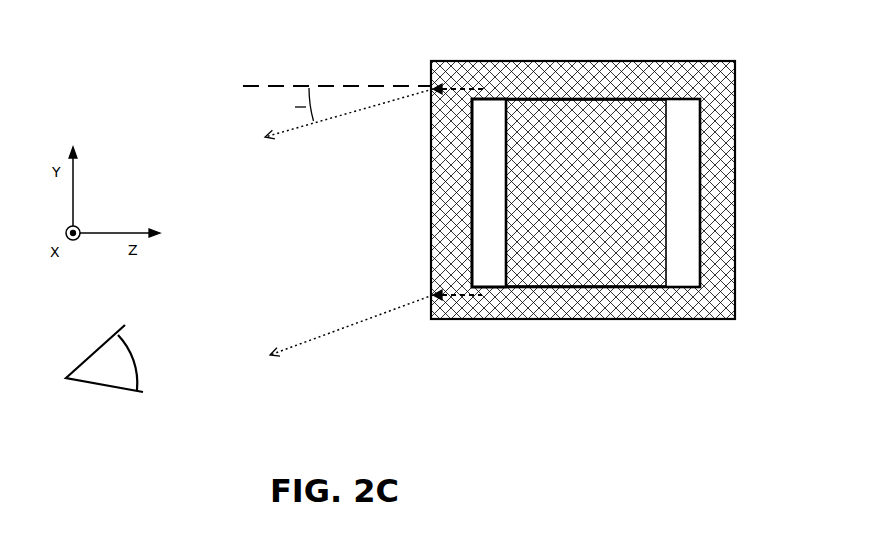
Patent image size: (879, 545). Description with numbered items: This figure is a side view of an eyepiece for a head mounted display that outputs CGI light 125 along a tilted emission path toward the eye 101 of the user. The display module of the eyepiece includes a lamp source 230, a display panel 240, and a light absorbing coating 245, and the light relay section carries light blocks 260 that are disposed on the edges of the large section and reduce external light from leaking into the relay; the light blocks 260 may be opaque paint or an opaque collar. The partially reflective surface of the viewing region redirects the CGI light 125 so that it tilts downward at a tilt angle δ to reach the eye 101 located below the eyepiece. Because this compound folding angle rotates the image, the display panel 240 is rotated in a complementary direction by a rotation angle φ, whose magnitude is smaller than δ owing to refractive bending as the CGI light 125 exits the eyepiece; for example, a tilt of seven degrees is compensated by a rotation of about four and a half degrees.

The CGI light 125 is at (367, 107).
The light blocks 260 is at (615, 61).
The lamp source 230 is at (702, 143).
The display panel 240 is at (472, 193).
The light absorbing coating 245 is at (600, 188).
The eye 101 is at (121, 375).